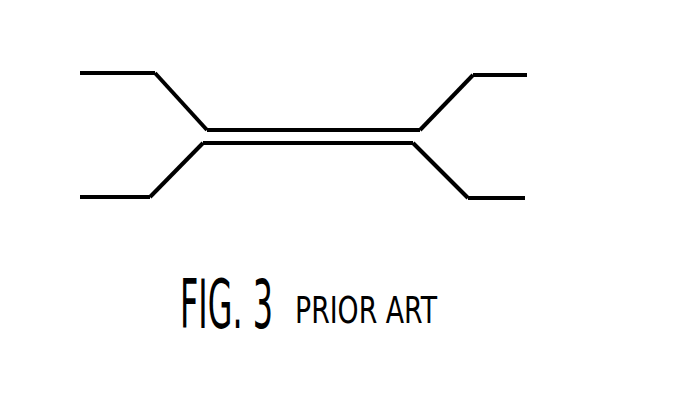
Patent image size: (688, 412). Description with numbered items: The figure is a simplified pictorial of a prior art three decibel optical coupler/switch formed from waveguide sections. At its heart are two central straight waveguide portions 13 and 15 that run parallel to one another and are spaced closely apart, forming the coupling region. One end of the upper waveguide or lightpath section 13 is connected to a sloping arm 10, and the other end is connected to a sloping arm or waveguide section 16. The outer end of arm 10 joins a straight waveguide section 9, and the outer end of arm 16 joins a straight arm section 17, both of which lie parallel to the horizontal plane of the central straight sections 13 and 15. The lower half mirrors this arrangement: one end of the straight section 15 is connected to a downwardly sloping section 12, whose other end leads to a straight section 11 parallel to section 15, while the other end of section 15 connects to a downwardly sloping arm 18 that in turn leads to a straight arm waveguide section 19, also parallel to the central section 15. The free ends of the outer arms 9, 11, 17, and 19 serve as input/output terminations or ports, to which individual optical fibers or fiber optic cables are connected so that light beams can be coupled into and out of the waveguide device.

The straight waveguide section 9 is at (122, 73).
The sloping arm 10 is at (177, 97).
The central straight waveguide portion 13 is at (322, 130).
The sloping arm 16 is at (442, 103).
The straight arm section 17 is at (498, 75).
The straight section 11 is at (103, 197).
The downwardly sloping section 12 is at (172, 170).
The central straight waveguide portion 15 is at (307, 143).
The downwardly sloping arm 18 is at (435, 167).
The straight arm waveguide section 19 is at (498, 198).